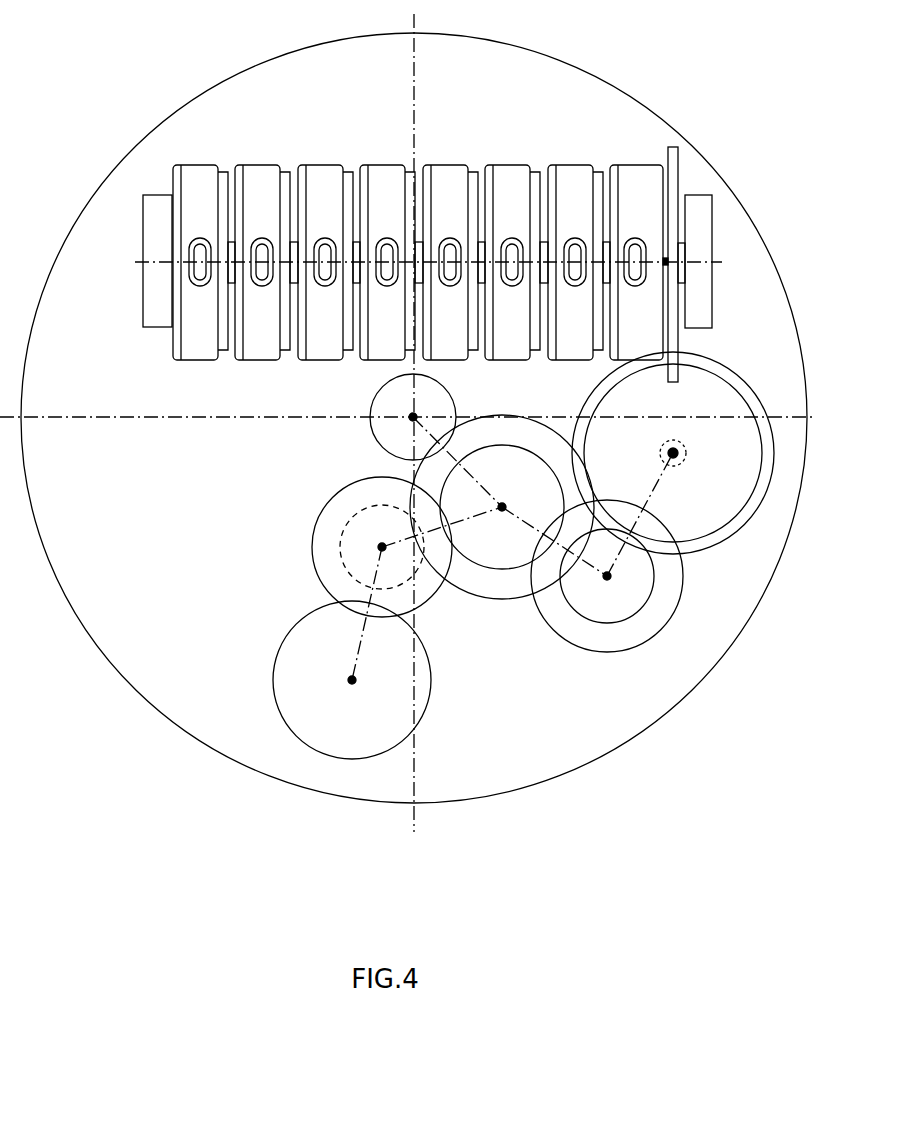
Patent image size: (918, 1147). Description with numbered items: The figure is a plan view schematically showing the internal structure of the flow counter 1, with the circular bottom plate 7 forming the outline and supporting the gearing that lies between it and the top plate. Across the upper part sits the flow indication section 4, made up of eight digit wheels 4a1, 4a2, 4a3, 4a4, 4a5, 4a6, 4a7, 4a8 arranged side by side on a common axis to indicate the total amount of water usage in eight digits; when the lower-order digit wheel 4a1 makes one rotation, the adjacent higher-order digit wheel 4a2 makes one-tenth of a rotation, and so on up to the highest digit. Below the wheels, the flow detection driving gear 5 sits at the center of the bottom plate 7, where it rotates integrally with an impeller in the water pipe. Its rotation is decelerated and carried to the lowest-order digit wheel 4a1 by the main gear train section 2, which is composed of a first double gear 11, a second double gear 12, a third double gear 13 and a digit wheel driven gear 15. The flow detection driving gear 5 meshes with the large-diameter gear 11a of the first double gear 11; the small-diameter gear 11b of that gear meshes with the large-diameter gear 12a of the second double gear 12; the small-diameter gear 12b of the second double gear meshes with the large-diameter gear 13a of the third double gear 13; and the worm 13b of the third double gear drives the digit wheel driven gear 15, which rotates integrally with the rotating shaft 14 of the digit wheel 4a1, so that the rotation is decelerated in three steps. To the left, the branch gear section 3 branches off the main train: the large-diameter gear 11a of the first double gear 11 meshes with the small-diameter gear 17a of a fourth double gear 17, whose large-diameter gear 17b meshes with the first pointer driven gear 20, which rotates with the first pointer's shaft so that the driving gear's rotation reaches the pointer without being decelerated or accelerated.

The flow counter 1 is at (602, 67).
The main gear train section 2 is at (655, 645).
The branch gear section 3 is at (313, 517).
The flow indication section 4 is at (298, 160).
The digit wheel 4a1 is at (648, 178).
The digit wheel 4a2 is at (570, 180).
The digit wheel 4a3 is at (510, 178).
The digit wheel 4a4 is at (450, 180).
The digit wheel 4a5 is at (387, 180).
The digit wheel 4a6 is at (323, 182).
The digit wheel 4a7 is at (257, 182).
The digit wheel 4a8 is at (205, 182).
The flow detection driving gear 5 is at (387, 402).
The bottom plate 7 is at (140, 660).
The first double gear 11 is at (502, 532).
The large-diameter gear 11a is at (483, 587).
The small-diameter gear 11b is at (510, 460).
The second double gear 12 is at (669, 608).
The large-diameter gear 12a is at (650, 623).
The small-diameter gear 12b is at (645, 588).
The third double gear 13 is at (719, 467).
The large-diameter gear 13a is at (717, 500).
The worm 13b is at (737, 410).
The rotating shaft 14 is at (167, 250).
The digit wheel driven gear 15 is at (712, 355).
The fourth double gear 17 is at (345, 527).
The small-diameter gear 17a is at (340, 537).
The large-diameter gear 17b is at (345, 507).
The first pointer driven gear 20 is at (313, 713).